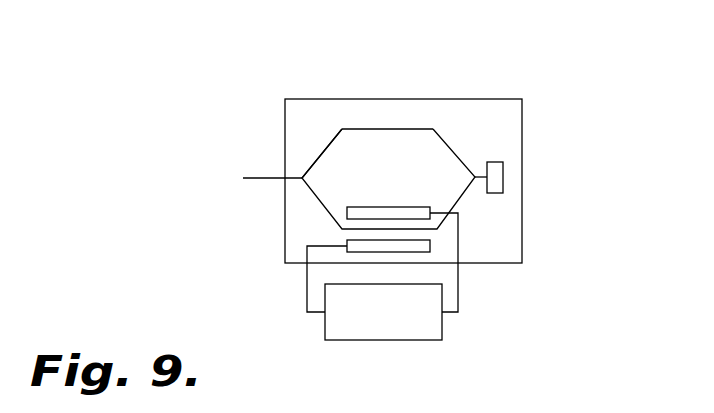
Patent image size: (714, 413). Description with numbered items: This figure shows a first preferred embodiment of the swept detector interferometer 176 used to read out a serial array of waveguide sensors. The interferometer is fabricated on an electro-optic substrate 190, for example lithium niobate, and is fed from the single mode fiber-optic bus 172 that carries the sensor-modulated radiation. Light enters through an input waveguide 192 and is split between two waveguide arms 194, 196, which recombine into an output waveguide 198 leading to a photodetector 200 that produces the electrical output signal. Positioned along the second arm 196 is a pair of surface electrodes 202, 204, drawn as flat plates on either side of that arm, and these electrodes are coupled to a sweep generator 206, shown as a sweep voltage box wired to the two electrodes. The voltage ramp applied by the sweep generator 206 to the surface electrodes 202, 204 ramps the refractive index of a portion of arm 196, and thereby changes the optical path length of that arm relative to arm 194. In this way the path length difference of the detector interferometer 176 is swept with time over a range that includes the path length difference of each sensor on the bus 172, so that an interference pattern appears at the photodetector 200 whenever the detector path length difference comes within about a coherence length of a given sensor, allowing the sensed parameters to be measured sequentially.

The swept detector interferometer 176 is at (338, 80).
The electro-optic substrate 190 is at (522, 112).
The single mode fiber-optic bus 172 is at (268, 178).
The input waveguide 192 is at (293, 177).
The waveguide arm 194 is at (395, 127).
The waveguide arm 196 is at (345, 222).
The output waveguide 198 is at (478, 177).
The photodetector 200 is at (497, 161).
The surface electrode 202 is at (423, 207).
The surface electrode 204 is at (430, 240).
The sweep generator 206 is at (325, 322).